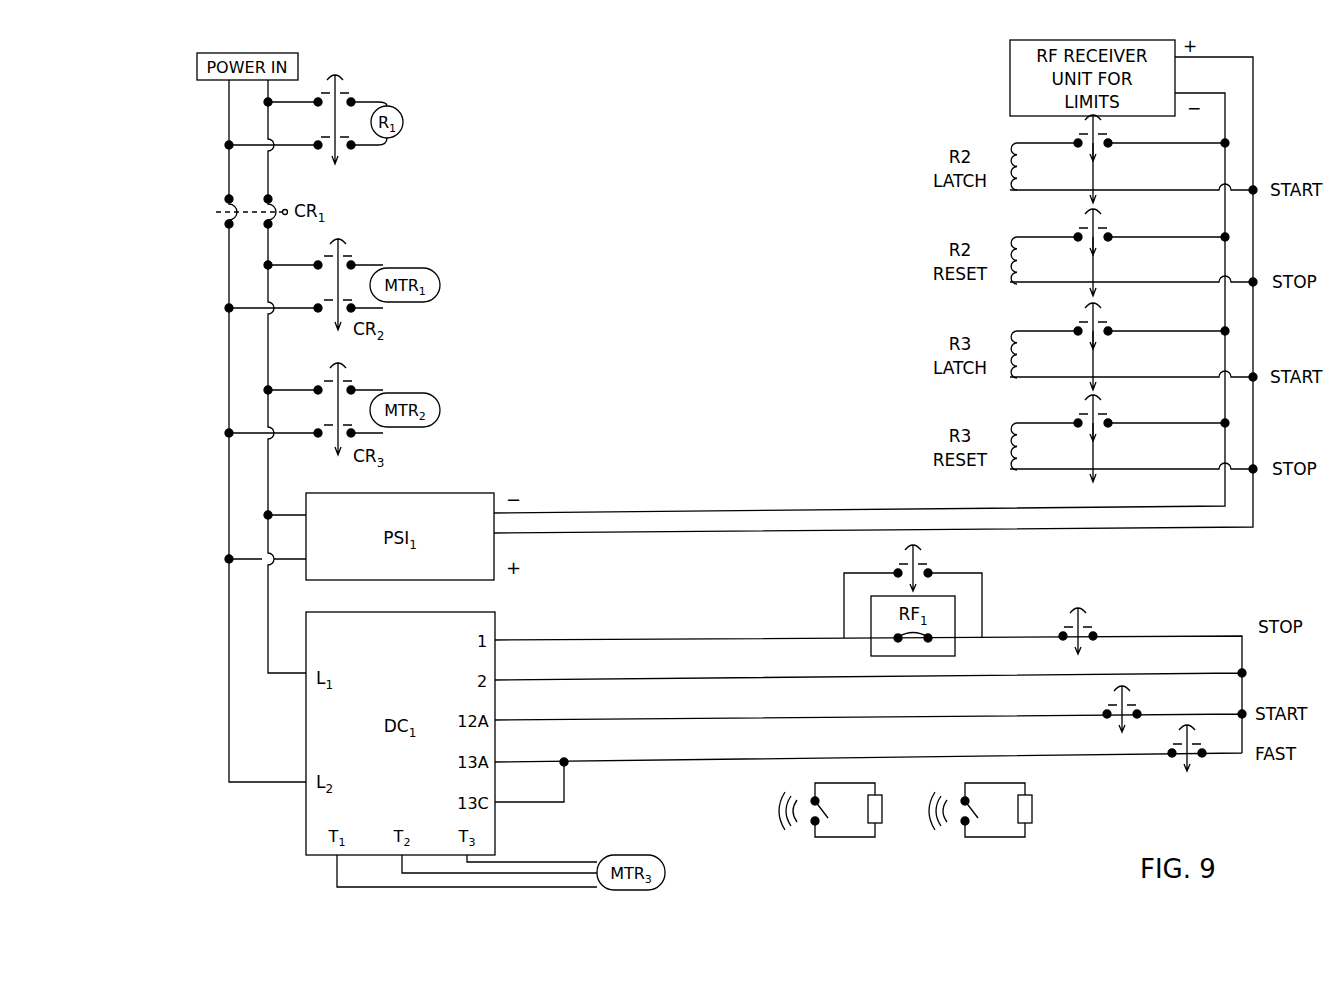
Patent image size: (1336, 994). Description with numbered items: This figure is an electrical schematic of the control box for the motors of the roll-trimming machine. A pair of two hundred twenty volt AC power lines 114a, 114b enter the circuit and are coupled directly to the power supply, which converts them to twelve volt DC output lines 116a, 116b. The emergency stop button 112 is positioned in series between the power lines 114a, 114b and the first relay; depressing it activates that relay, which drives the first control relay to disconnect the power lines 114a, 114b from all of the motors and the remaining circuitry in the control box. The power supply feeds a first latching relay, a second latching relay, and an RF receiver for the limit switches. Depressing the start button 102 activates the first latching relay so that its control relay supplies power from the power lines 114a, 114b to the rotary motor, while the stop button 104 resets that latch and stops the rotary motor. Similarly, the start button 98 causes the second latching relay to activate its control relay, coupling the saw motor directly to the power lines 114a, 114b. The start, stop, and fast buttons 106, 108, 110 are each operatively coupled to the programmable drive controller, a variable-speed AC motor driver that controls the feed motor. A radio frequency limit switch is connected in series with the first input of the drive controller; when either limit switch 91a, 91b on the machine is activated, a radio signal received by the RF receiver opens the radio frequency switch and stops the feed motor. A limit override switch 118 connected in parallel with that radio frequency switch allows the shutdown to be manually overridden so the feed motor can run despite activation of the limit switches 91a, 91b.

The power line 114a is at (226, 338).
The power line 114b is at (266, 370).
The DC output line 116a is at (640, 512).
The DC output line 116b is at (582, 532).
The start button 102 is at (1111, 148).
The stop button 104 is at (1111, 242).
The start button 98 is at (1111, 336).
The emergency stop button 112 is at (1111, 428).
The limit override switch 118 is at (932, 567).
The stop button 108 is at (1097, 641).
The start button 106 is at (1104, 721).
The fast button 110 is at (1170, 764).
The limit switch 91a is at (883, 813).
The limit switch 91b is at (1033, 812).